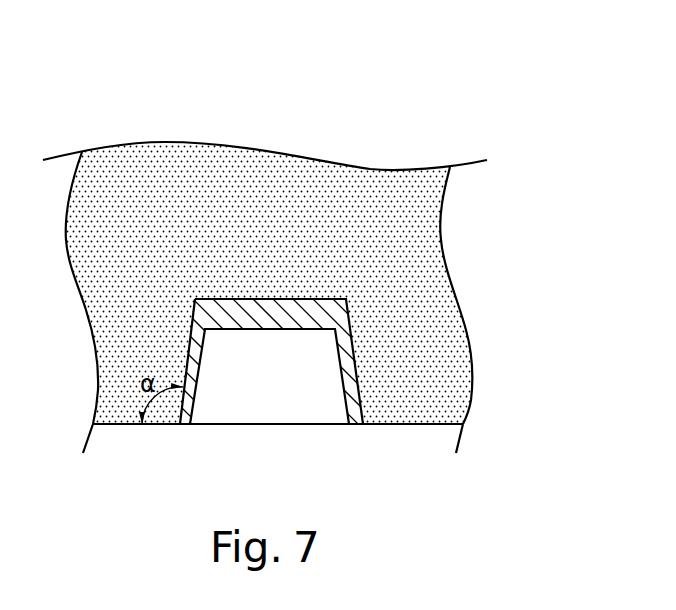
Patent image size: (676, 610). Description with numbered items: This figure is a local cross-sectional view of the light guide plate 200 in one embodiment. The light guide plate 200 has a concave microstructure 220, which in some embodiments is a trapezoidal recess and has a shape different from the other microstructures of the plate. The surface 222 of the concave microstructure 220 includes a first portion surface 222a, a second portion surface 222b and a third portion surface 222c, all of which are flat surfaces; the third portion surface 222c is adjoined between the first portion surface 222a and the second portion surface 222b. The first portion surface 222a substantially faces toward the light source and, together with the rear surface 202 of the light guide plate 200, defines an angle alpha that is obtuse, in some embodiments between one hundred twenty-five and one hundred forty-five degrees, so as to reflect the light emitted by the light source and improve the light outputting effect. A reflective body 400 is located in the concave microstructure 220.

The light guide plate 200 is at (438, 302).
The rear surface 202 is at (115, 427).
The concave microstructure 220 is at (315, 396).
The surface 222 is at (448, 68).
The first portion surface 222a is at (188, 337).
The second portion surface 222b is at (353, 345).
The third portion surface 222c is at (255, 300).
The reflective body 400 is at (250, 322).